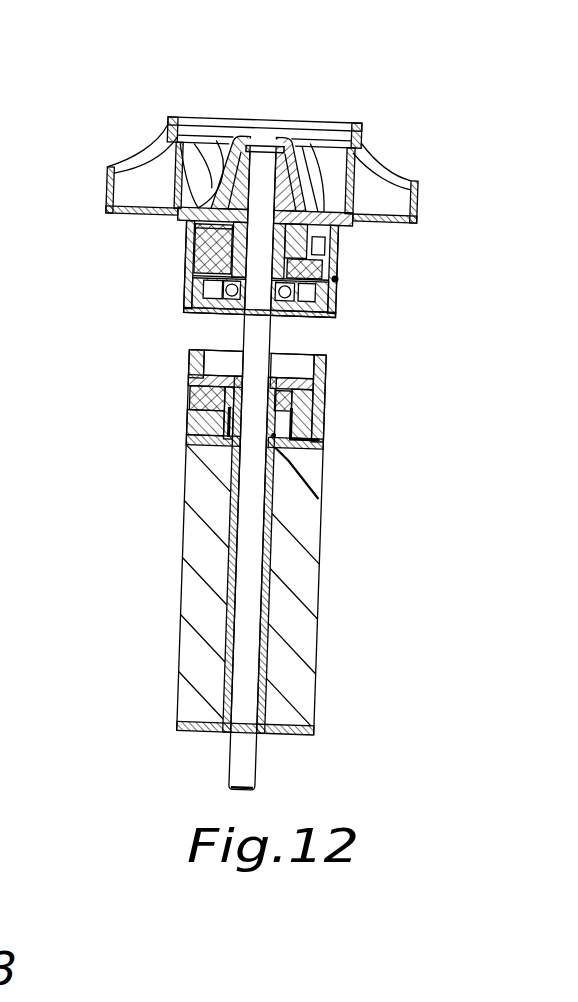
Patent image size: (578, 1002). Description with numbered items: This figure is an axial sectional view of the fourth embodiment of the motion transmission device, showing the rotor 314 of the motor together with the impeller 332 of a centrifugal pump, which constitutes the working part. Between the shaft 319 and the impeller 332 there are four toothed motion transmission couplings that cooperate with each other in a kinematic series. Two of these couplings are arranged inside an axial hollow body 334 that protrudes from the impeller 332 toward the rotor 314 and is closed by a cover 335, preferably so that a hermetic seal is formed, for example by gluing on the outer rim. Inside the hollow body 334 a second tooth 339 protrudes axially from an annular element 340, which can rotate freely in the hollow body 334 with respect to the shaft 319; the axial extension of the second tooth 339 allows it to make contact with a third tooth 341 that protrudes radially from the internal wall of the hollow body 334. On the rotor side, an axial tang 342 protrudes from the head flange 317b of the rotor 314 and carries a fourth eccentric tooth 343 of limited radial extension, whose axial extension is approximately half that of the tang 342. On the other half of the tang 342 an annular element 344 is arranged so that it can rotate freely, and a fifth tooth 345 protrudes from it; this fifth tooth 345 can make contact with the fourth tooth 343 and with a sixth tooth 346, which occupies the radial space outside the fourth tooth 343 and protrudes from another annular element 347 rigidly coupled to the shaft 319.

The impeller 332 is at (381, 156).
The cover 335 is at (192, 316).
The second tooth 339 is at (172, 245).
The third tooth 341 is at (340, 240).
The axial hollow body 334 is at (354, 268).
The annular element 340 is at (338, 283).
The rotor 314 is at (168, 642).
The annular element 347 is at (192, 377).
The fifth tooth 345 is at (194, 400).
The axial tang 342 is at (190, 428).
The annular element 344 is at (300, 398).
The sixth tooth 346 is at (326, 432).
The head flange 317b is at (324, 444).
The fourth eccentric tooth 343 is at (320, 494).
The shaft 319 is at (248, 663).